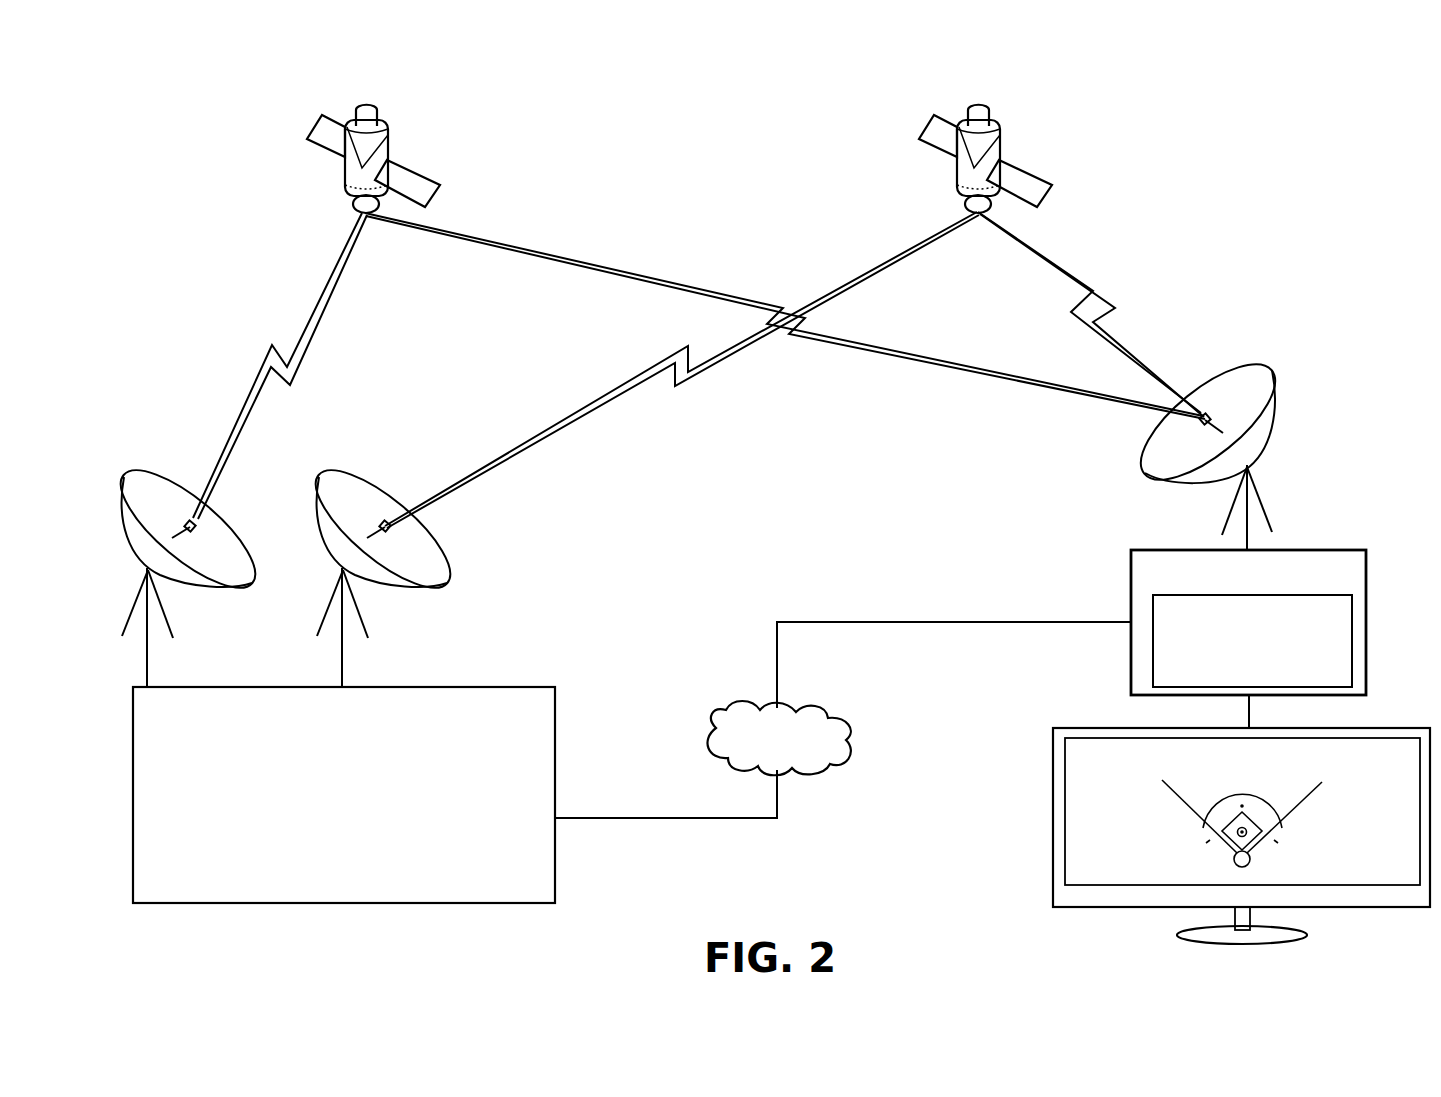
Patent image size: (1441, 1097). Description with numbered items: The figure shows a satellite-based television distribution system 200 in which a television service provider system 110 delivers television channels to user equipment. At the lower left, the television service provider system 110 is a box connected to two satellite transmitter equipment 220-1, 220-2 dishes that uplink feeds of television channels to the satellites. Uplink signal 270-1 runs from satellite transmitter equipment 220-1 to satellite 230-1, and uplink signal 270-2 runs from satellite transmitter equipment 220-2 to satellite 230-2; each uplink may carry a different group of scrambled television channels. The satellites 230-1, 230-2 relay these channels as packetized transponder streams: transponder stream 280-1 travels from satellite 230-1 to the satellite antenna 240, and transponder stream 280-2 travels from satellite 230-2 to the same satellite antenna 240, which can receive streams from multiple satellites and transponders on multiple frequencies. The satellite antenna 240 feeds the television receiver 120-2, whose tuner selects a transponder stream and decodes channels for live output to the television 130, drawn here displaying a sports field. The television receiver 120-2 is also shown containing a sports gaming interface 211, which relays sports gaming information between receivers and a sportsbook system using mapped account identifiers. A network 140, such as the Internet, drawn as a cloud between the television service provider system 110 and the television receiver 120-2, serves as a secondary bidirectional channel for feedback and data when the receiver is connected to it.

The satellite-based television distribution system 200 is at (151, 102).
The satellite 230-1 is at (363, 106).
The satellite 230-2 is at (1043, 178).
The satellite transmitter equipment 220-1 is at (144, 474).
The satellite transmitter equipment 220-2 is at (362, 472).
The satellite antenna 240 is at (1250, 370).
The uplink signal 270-1 is at (318, 308).
The uplink signal 270-2 is at (834, 284).
The transponder stream 280-1 is at (538, 246).
The transponder stream 280-2 is at (1092, 290).
The television service provider system 110 is at (548, 686).
The network 140 is at (708, 722).
The television receiver 120-2 is at (1312, 548).
The sports gaming interface 211 is at (1312, 682).
The television 130 is at (1398, 727).